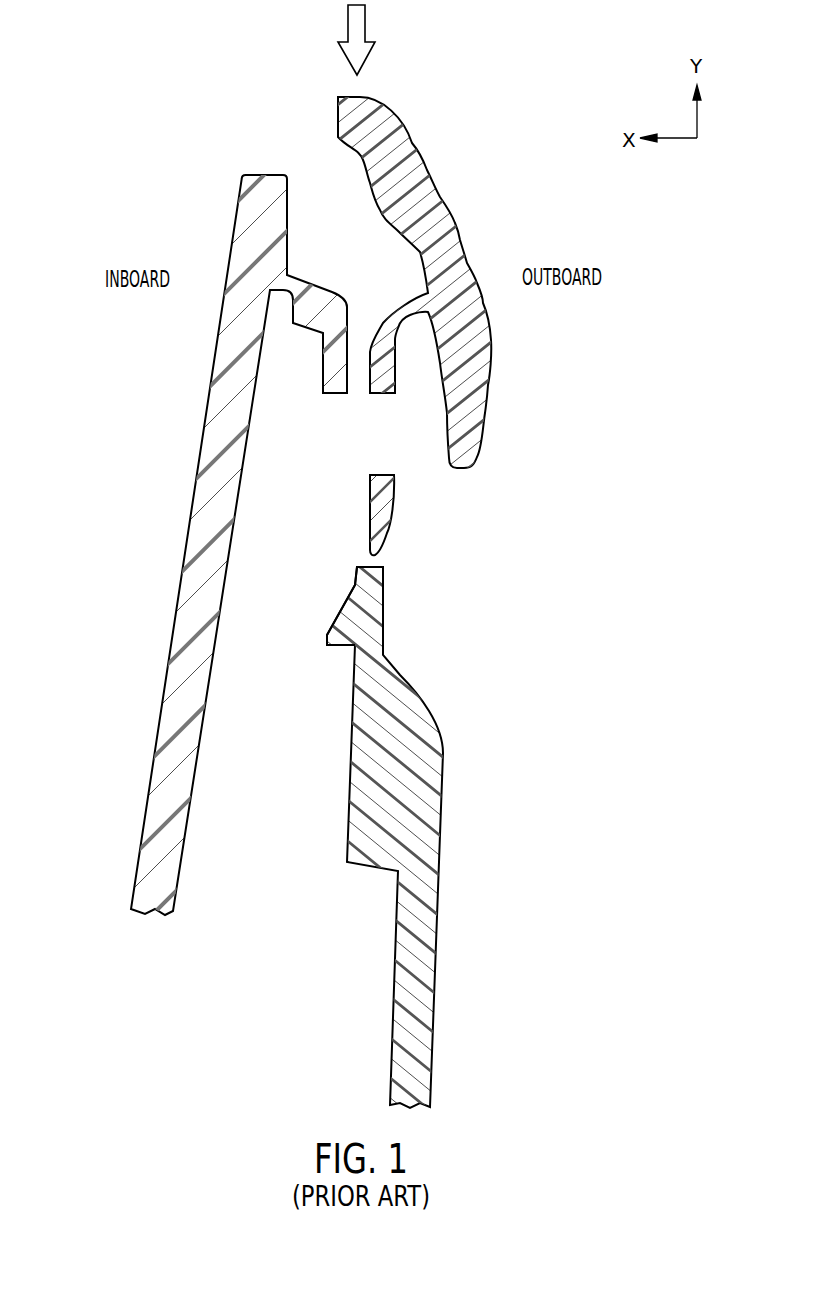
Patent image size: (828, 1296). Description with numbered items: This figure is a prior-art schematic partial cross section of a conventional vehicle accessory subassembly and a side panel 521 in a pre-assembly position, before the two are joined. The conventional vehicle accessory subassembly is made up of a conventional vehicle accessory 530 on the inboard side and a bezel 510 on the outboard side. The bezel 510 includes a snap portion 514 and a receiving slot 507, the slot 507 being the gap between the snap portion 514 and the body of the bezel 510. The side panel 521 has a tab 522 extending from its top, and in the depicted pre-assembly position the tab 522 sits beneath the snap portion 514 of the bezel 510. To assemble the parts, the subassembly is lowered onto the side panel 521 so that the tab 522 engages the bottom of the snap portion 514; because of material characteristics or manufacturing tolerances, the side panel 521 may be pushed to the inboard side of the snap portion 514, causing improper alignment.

The receiving slot 507 is at (403, 450).
The bezel 510 is at (508, 236).
The snap portion 514 is at (377, 508).
The side panel 521 is at (432, 752).
The tab 522 is at (368, 603).
The conventional vehicle accessory 530 is at (180, 387).